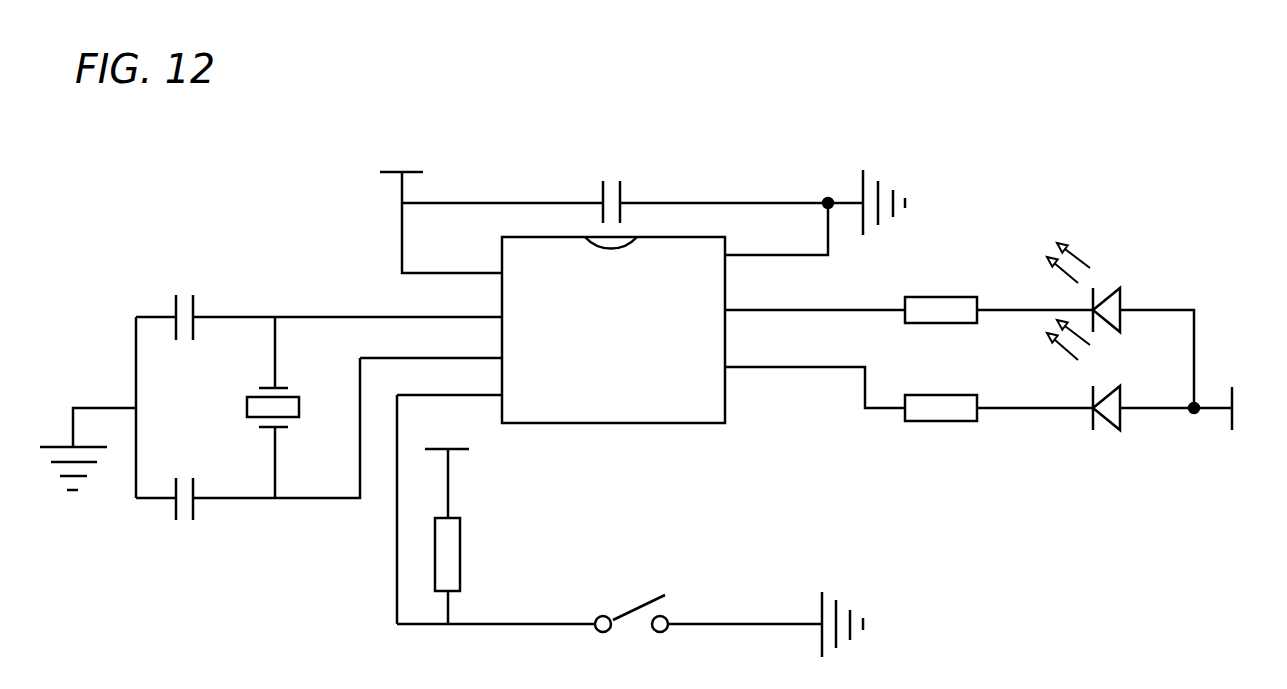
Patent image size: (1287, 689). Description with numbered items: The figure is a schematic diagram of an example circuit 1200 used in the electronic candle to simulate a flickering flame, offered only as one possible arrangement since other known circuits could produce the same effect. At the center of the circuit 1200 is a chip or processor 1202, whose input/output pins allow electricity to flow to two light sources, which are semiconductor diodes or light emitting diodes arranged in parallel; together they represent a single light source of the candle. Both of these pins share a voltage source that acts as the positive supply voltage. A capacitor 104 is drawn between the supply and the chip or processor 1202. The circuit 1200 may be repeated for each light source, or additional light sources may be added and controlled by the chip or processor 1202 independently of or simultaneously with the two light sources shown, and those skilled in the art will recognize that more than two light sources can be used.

The circuit 1200 is at (678, 95).
The capacitor 104 is at (636, 197).
The chip or processor 1202 is at (640, 346).